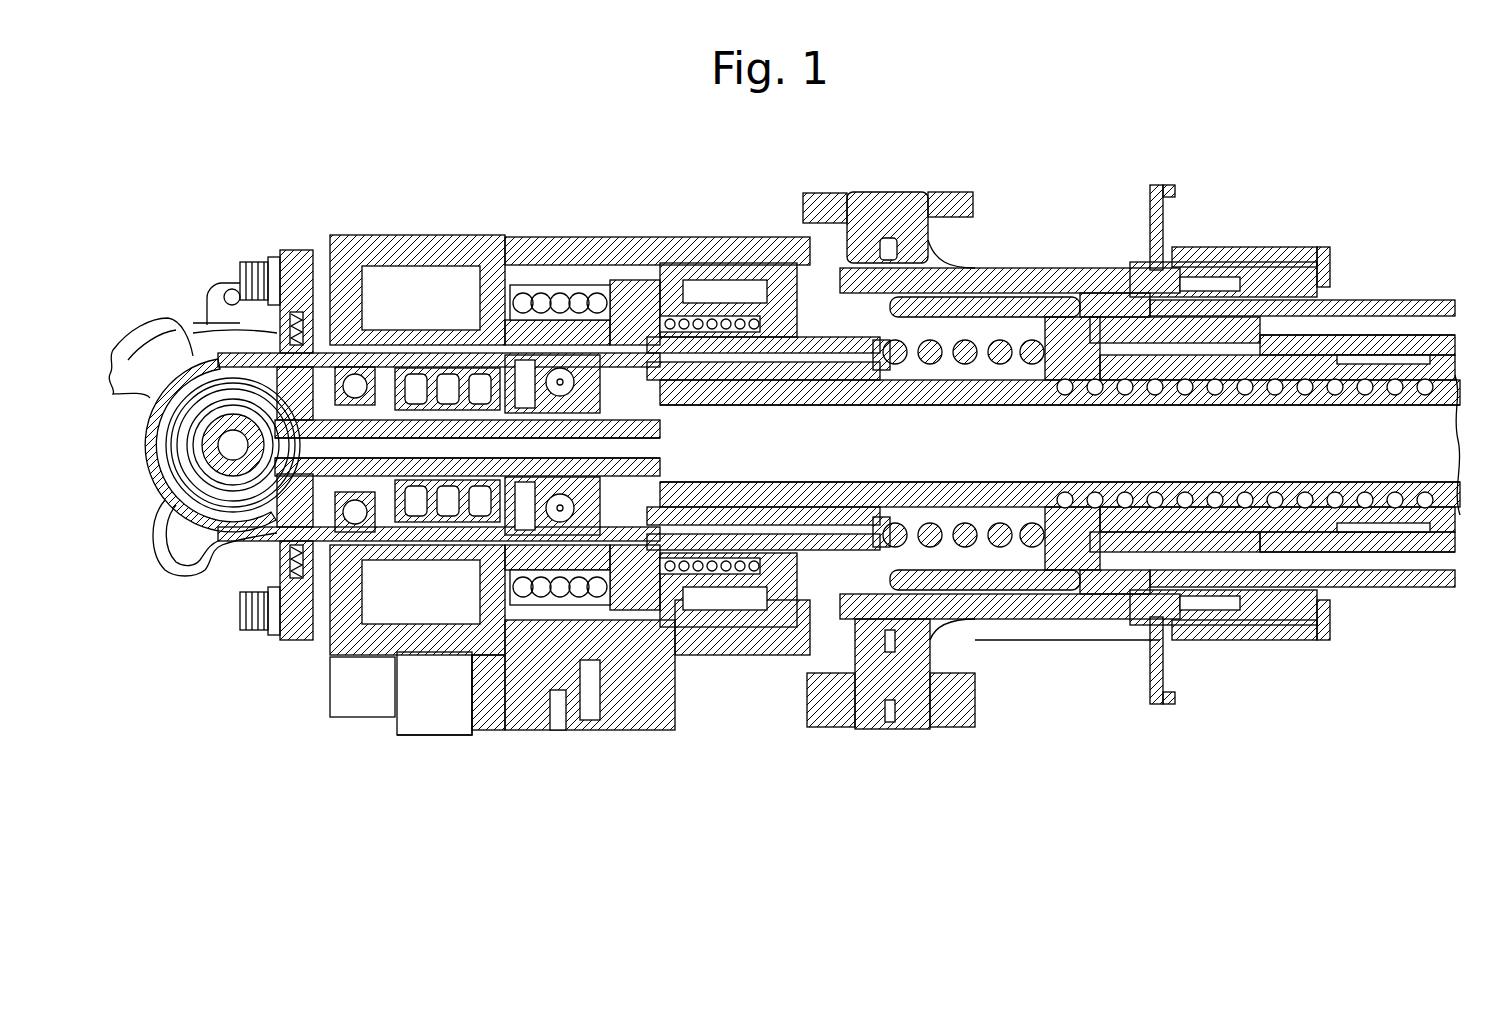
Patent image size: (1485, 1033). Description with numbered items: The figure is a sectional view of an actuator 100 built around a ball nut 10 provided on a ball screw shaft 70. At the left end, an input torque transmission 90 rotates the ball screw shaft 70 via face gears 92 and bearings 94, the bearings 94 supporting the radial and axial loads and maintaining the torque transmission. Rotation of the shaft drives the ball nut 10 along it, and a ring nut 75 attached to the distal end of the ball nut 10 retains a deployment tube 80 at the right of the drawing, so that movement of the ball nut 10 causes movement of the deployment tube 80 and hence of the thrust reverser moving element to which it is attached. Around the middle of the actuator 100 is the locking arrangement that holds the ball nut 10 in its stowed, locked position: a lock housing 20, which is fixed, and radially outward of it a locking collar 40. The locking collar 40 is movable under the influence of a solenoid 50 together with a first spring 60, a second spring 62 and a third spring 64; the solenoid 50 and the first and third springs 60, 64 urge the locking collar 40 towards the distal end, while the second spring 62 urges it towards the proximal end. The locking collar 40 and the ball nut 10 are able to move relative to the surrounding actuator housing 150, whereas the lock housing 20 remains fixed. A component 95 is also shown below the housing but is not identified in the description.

The actuator 100 is at (644, 461).
The ball nut 10 is at (1146, 515).
The lock housing 20 is at (822, 535).
The locking collar 40 is at (742, 548).
The solenoid 50 is at (678, 575).
The first spring 60 is at (715, 330).
The second spring 62 is at (540, 296).
The third spring 64 is at (970, 340).
The ball screw shaft 70 is at (1317, 492).
The ring nut 75 is at (1130, 330).
The deployment tube 80 is at (1448, 345).
The input torque transmission 90 is at (233, 445).
The face gears 92 is at (300, 300).
The bearings 94 is at (355, 512).
The motor 95 is at (444, 705).
The actuator housing 150 is at (1255, 272).